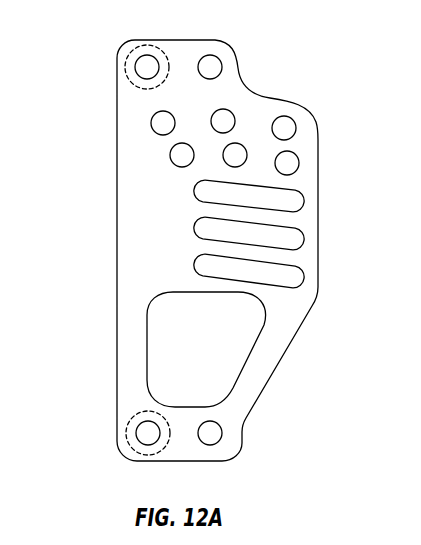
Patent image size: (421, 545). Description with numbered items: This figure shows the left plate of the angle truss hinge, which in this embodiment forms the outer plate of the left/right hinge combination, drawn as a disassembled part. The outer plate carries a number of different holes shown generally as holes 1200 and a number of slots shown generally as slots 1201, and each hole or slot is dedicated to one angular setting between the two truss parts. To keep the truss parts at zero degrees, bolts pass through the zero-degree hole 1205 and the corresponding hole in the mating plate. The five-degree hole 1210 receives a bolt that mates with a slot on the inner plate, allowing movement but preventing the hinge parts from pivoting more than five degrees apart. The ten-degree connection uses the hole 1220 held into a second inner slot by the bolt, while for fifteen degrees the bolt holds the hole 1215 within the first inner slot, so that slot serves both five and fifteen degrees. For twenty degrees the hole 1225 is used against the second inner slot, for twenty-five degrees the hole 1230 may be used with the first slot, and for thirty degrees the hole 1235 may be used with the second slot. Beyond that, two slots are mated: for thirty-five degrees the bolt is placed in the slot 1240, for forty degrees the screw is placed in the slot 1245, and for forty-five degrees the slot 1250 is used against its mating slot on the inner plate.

The holes 1200 is at (128, 97).
The slots 1201 is at (183, 232).
The 0° hole 1205 is at (211, 67).
The 5° hole 1210 is at (163, 123).
The hole for 15° 1215 is at (224, 120).
The hole for 10° 1220 is at (182, 155).
The hole for 20° 1225 is at (235, 155).
The hole for 25° 1230 is at (284, 128).
The hole for 30° 1235 is at (287, 163).
The slot for 35° 1240 is at (290, 202).
The 40 degree slot 1245 is at (290, 240).
The 45° slot 1250 is at (290, 278).